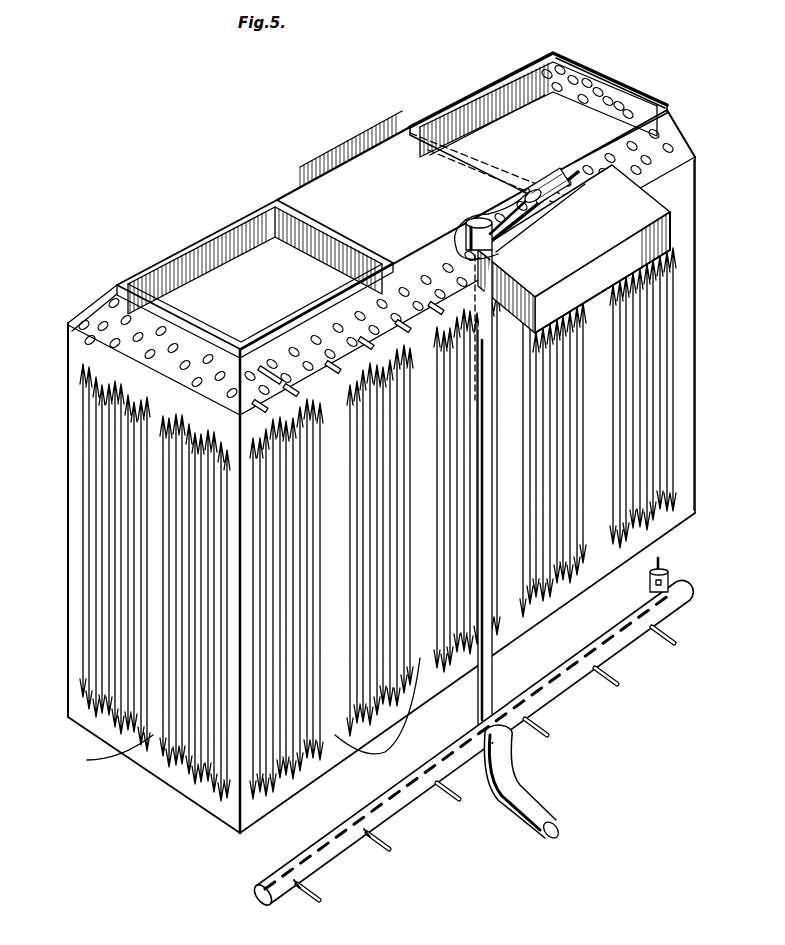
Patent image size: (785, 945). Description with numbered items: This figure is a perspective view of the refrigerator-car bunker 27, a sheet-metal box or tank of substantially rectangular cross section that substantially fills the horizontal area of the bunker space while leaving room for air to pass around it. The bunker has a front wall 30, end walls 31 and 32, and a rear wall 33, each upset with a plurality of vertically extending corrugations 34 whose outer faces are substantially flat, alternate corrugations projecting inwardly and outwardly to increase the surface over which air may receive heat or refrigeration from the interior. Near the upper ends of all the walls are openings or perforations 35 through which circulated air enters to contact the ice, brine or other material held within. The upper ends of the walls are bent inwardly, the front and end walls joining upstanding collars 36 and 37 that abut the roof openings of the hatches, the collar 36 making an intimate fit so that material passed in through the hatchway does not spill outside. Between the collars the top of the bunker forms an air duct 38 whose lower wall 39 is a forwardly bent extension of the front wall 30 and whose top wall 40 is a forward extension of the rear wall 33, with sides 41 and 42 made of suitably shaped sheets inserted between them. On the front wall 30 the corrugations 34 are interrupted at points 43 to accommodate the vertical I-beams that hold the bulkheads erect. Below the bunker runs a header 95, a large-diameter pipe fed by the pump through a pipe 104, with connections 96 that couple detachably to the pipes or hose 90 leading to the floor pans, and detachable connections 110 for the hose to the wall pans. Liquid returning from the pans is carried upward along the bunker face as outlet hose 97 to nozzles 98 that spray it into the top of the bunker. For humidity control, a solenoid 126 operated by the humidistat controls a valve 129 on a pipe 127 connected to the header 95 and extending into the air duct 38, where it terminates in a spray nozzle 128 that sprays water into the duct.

The bunker 27 is at (680, 340).
The front wall 30 is at (683, 422).
The end wall 31 is at (170, 783).
The end wall 32 is at (560, 110).
The rear wall 33 is at (488, 110).
The corrugations 34 is at (92, 617).
The perforations 35 is at (90, 318).
The collar 36 is at (218, 240).
The collar 37 is at (617, 90).
The air duct 38 is at (627, 250).
The lower wall 39 is at (633, 254).
The top wall 40 is at (630, 203).
The side 41 is at (668, 240).
The side 42 is at (510, 300).
The corrugation interruptions 43 is at (241, 716).
The pipes or hose 90 is at (320, 893).
The header 95 is at (277, 890).
The connections 96 is at (299, 879).
The outlet hose 97 is at (300, 394).
The nozzles 98 is at (266, 368).
The pipe 104 is at (530, 813).
The detachable connections 110 is at (668, 576).
The solenoid 126 is at (552, 182).
The pipe 127 is at (489, 684).
The spray nozzle 128 is at (468, 234).
The valve 129 is at (527, 266).